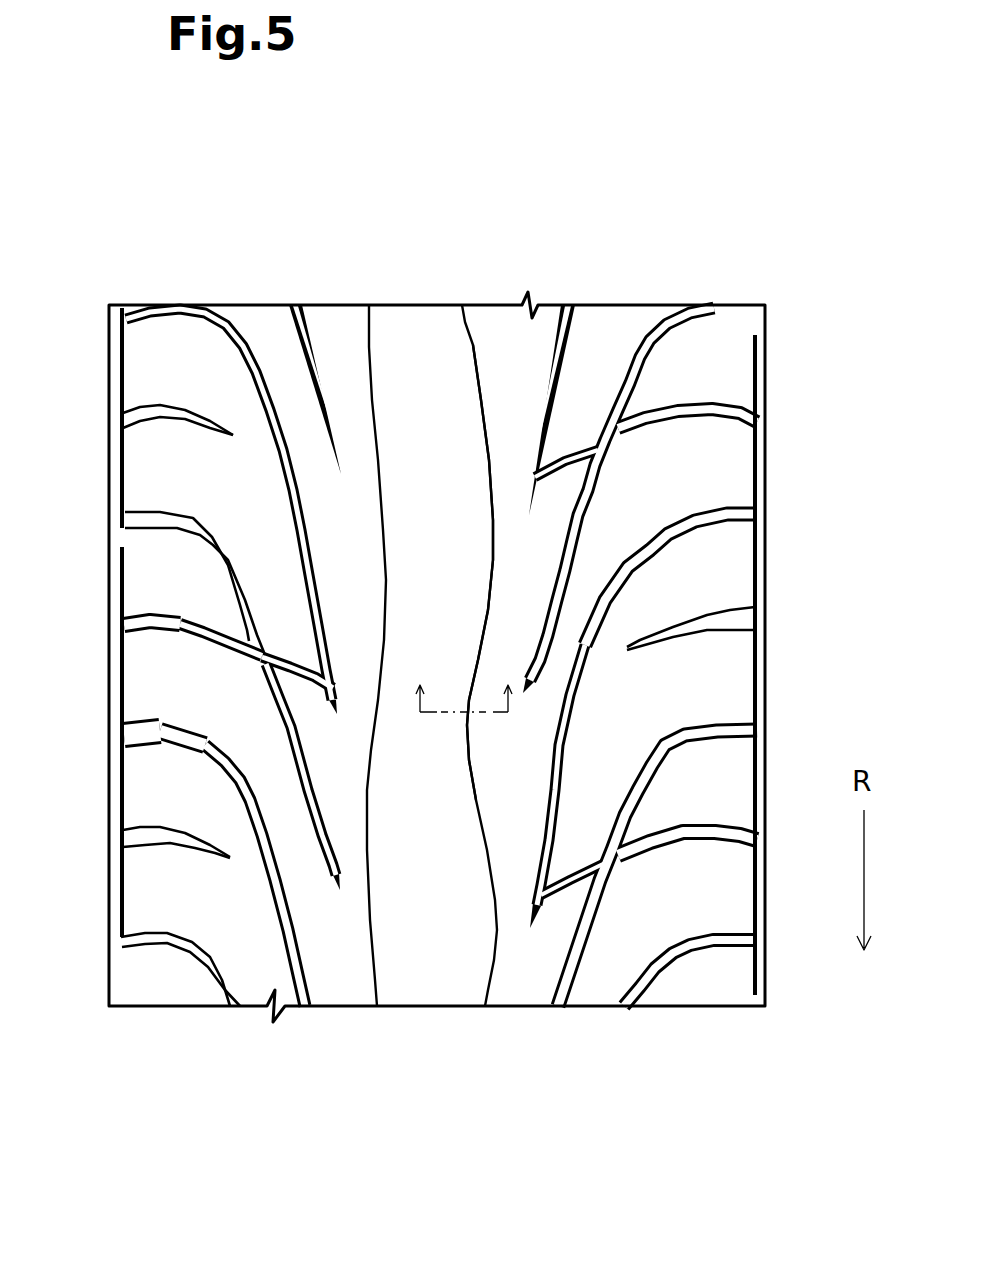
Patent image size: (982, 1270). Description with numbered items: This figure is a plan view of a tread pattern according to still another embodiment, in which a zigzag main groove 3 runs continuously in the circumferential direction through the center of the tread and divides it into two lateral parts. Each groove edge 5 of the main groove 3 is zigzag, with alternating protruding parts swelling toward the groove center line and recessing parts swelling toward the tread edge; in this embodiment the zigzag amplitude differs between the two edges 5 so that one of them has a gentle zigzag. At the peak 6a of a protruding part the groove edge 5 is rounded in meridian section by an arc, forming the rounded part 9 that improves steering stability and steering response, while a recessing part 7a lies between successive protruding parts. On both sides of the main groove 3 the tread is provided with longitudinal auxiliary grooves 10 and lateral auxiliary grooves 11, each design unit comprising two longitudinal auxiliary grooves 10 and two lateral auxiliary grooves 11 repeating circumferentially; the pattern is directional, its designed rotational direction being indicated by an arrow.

The main groove 3 is at (420, 350).
The groove edge 5 is at (373, 345).
The groove wall edge of rib 7a is at (486, 514).
The peak of the protruding part 6a is at (464, 717).
The rounded part 9 is at (677, 705).
The longitudinal auxiliary groove 10 is at (310, 367).
The lateral auxiliary groove 11 is at (213, 428).